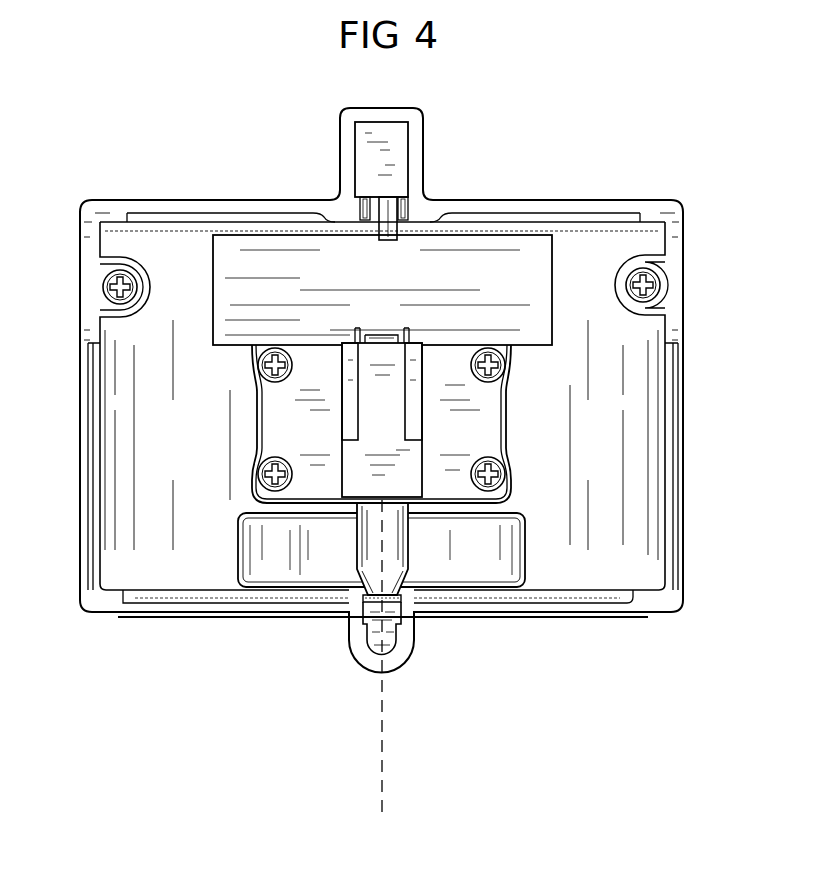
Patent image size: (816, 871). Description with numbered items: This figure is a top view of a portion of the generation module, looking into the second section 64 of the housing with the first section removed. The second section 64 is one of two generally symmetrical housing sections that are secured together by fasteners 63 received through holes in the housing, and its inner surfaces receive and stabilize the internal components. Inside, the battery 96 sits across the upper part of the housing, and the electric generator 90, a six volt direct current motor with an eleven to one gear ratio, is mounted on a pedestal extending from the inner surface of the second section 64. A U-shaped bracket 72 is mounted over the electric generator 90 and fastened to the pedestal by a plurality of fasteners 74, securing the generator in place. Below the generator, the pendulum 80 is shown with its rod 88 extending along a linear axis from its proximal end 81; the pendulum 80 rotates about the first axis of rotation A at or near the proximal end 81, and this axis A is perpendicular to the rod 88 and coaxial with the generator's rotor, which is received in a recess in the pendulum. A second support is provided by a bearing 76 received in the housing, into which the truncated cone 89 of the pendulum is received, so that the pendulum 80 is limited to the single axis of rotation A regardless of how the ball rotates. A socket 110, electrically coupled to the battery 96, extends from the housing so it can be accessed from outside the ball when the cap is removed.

The second section 64 is at (118, 585).
The socket 110 is at (398, 160).
The battery 96 is at (488, 243).
The U-shaped bracket 72 is at (283, 420).
The fasteners 74 is at (258, 371).
The electric generator 90 is at (354, 457).
The rod 88 is at (258, 562).
The pendulum 80 is at (302, 565).
The proximal end 81 is at (361, 557).
The truncated cone 89 is at (352, 630).
The bearing 76 is at (393, 633).
The first axis of rotation A is at (382, 748).
The fasteners 63 is at (107, 275).